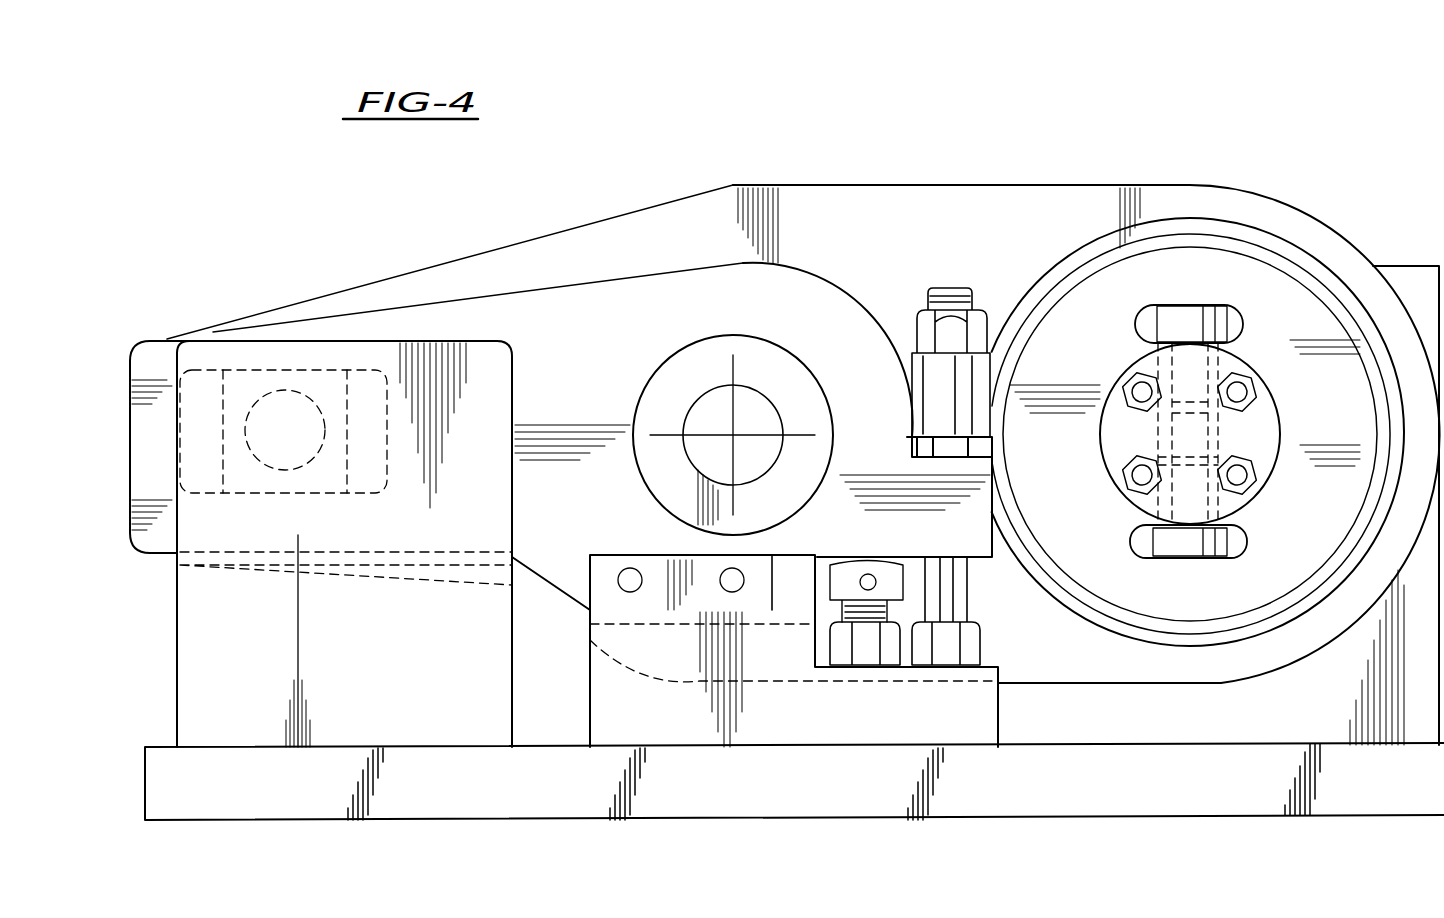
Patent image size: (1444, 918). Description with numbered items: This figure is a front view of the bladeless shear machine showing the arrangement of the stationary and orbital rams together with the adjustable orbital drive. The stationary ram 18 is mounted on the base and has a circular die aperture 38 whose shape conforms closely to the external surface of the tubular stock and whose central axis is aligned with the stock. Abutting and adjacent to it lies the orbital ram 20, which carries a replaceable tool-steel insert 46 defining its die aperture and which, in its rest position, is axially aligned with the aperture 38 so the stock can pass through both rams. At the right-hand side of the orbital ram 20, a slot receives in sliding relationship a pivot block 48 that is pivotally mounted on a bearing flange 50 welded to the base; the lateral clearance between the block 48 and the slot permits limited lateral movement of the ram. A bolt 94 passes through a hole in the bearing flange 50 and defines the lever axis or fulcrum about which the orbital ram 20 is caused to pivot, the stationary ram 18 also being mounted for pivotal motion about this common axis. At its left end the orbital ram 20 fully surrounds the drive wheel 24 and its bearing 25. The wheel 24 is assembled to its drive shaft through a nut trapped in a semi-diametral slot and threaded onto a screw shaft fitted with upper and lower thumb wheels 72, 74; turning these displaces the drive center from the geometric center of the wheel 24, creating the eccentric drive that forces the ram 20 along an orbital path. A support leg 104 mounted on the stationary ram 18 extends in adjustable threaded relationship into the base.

The stationary ram 18 is at (828, 284).
The orbital ram 20 is at (1063, 185).
The drive wheel 24 is at (1318, 292).
The bearing 25 is at (1292, 264).
The circular die aperture 38 is at (716, 394).
The replaceable tool-steel insert 46 is at (385, 470).
The pivot block 48 is at (207, 386).
The bearing flange 50 is at (177, 630).
The upper thumb wheel 72 is at (1200, 320).
The lower thumb wheel 74 is at (1205, 548).
The bolt 94 is at (305, 404).
The support leg 104 is at (965, 588).